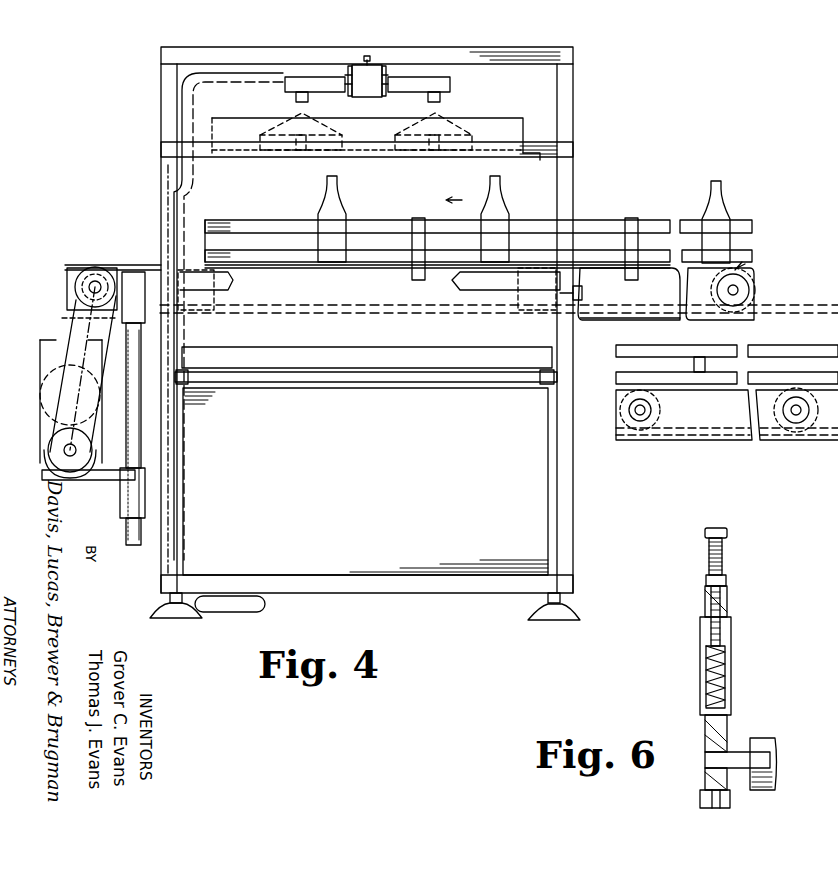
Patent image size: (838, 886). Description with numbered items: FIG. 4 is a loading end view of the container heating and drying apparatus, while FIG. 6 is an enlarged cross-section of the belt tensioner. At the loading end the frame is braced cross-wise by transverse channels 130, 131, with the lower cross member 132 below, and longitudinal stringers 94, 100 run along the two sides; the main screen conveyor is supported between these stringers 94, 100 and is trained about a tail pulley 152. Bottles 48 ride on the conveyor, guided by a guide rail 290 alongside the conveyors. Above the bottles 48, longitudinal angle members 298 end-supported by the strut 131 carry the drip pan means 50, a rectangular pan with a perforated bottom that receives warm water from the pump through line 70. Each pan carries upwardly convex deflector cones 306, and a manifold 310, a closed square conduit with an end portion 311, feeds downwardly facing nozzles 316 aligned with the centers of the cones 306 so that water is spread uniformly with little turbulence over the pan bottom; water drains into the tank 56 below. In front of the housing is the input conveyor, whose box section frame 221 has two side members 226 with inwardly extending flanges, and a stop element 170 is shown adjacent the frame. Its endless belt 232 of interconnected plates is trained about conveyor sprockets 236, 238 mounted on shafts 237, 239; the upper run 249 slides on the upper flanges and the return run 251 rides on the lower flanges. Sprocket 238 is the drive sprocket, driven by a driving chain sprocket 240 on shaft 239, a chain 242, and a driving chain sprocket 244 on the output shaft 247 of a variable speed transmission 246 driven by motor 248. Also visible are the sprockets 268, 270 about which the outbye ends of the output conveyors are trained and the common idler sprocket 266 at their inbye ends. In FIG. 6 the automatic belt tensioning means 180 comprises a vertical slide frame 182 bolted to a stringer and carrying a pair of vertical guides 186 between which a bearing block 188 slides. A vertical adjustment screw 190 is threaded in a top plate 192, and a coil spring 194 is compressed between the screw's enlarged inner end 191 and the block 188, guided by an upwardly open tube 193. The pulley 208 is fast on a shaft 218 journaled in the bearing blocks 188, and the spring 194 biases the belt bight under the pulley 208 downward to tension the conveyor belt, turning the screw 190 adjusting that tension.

In FIG. 4, the transverse channel 130 is at (458, 48).
In FIG. 4, the bottom rail 132 is at (368, 580).
In FIG. 4, the line 70 is at (232, 78).
In FIG. 4, the manifold 310 is at (368, 56).
In FIG. 4, the end portion of manifold 311 is at (380, 94).
In FIG. 4, the nozzle 316 is at (306, 97).
In FIG. 4, the deflector cone 306 is at (436, 115).
In FIG. 4, the drip pan means 50 is at (367, 135).
In FIG. 4, the longitudinal angle member 298 is at (190, 143).
In FIG. 4, the transverse channel 131 is at (550, 158).
In FIG. 4, the bottle 48 is at (340, 198).
In FIG. 4, the guide rail 290 is at (596, 220).
In FIG. 4, the box section frame 221 is at (392, 308).
In FIG. 4, the stringer 100 is at (190, 312).
In FIG. 4, the tail pulley 152 is at (276, 312).
In FIG. 4, the stringer 94 is at (546, 312).
In FIG. 4, the stop 170 is at (582, 293).
In FIG. 4, the side member 226 is at (629, 294).
In FIG. 4, the return run 251 is at (606, 318).
In FIG. 4, the conveyor sprocket 236 is at (752, 284).
In FIG. 4, the shaft 237 is at (738, 290).
In FIG. 4, the endless belt 232 is at (740, 262).
In FIG. 4, the sprocket 270 is at (648, 442).
In FIG. 4, the sprocket 268 is at (792, 440).
In FIG. 4, the common idler sprocket 266 is at (825, 464).
In FIG. 4, the tank 56 is at (365, 481).
In FIG. 4, the upper run 249 is at (150, 264).
In FIG. 4, the drive sprocket 238 is at (68, 270).
In FIG. 4, the shaft 239 is at (88, 274).
In FIG. 4, the driving chain sprocket 240 is at (97, 268).
In FIG. 4, the chain 242 is at (68, 320).
In FIG. 4, the motor 248 is at (48, 348).
In FIG. 4, the variable speed transmission 246 is at (40, 466).
In FIG. 4, the output shaft 247 is at (78, 450).
In FIG. 4, the driving chain sprocket 244 is at (86, 478).
In FIG. 6, the automatic belt tensioning means 180 is at (690, 626).
In FIG. 6, the vertical adjustment screw 190 is at (722, 550).
In FIG. 6, the top plate 192 is at (726, 592).
In FIG. 6, the enlarged inner end 191 is at (728, 640).
In FIG. 6, the coil spring 194 is at (728, 664).
In FIG. 6, the tube 193 is at (731, 697).
In FIG. 6, the bearing block 188 is at (727, 734).
In FIG. 6, the pulley 208 is at (770, 786).
In FIG. 6, the shaft 218 is at (736, 776).
In FIG. 6, the vertical slide frame 182 is at (702, 808).
In FIG. 6, the vertical guide 186 is at (720, 808).